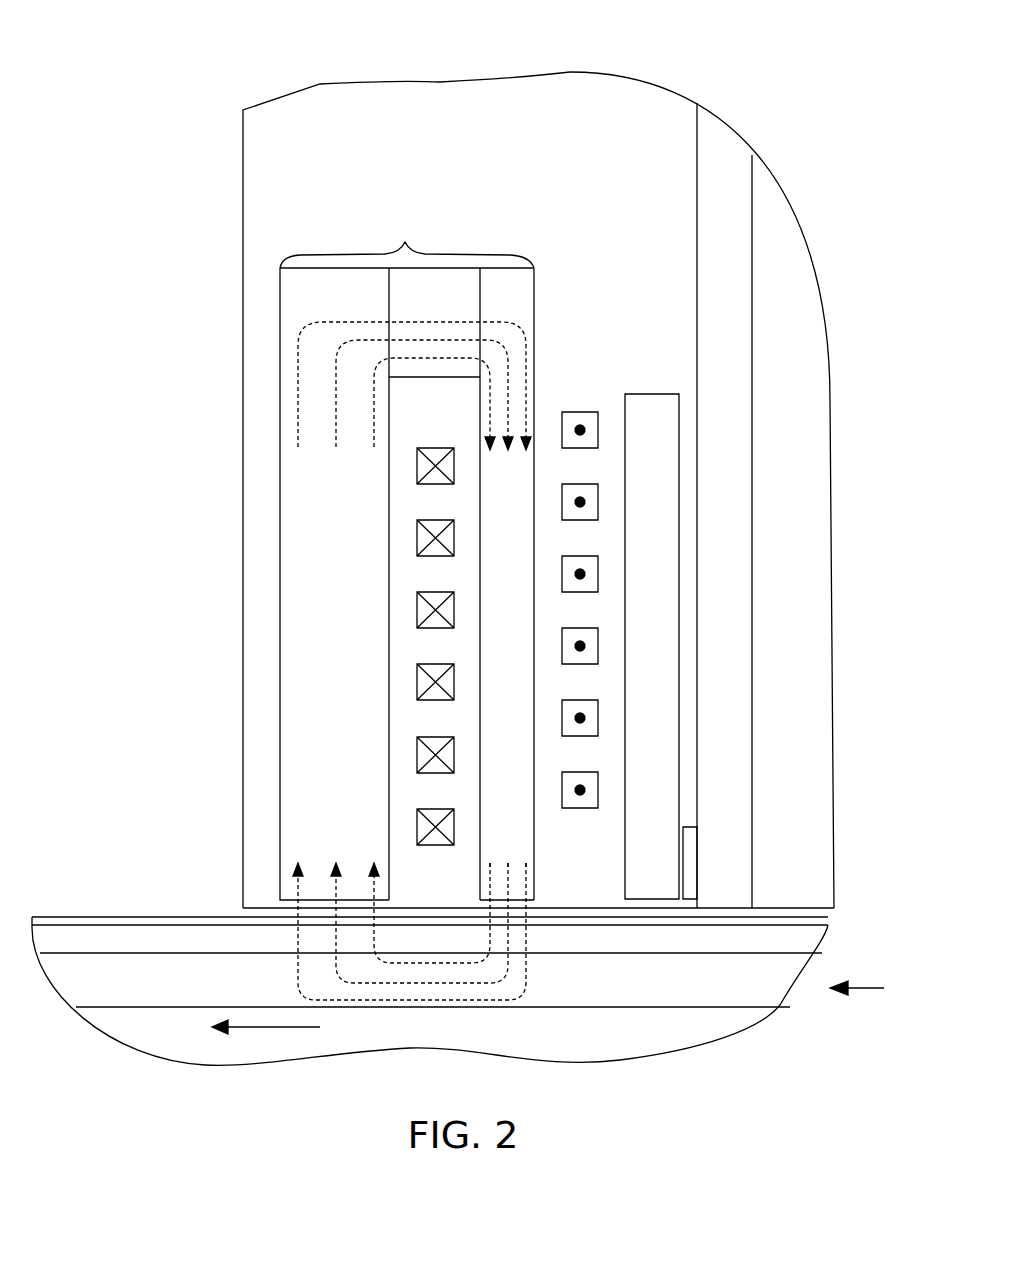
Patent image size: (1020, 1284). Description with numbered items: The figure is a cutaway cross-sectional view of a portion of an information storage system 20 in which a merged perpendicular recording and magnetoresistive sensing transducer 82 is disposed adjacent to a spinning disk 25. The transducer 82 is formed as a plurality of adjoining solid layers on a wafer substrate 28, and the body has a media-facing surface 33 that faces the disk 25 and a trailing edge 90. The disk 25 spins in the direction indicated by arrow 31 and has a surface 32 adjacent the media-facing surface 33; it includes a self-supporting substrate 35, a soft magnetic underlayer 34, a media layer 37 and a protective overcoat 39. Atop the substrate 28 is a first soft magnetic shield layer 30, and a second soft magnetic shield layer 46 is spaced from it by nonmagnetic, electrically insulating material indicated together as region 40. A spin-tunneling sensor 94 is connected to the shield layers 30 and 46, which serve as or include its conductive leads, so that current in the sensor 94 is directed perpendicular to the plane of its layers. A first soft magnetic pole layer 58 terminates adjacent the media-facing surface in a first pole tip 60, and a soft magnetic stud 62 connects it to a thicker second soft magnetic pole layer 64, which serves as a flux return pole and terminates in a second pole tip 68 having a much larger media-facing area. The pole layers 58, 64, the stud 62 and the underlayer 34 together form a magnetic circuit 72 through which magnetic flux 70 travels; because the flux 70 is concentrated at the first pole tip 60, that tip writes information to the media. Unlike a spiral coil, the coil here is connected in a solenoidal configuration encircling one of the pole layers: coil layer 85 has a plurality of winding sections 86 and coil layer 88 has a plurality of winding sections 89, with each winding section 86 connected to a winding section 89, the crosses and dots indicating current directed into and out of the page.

The information storage system 20 is at (126, 44).
The spinning disk 25 is at (871, 989).
The wafer substrate 28 is at (800, 573).
The first soft magnetic shield layer 30 is at (709, 606).
The arrow 31 is at (268, 1030).
The surface 32 is at (152, 905).
The media-facing surface 33 is at (622, 930).
The soft magnetic underlayer 34 is at (122, 987).
The self-supporting substrate 35 is at (520, 1039).
The media layer 37 is at (214, 945).
The protective overcoat 39 is at (684, 926).
The region of nonmagnetic, electrically insulating material 40 is at (633, 227).
The second soft magnetic shield layer 46 is at (635, 606).
The first soft magnetic pole layer 58 is at (492, 625).
The first pole tip 60 is at (518, 882).
The soft magnetic stud 62 is at (419, 303).
The second soft magnetic pole layer 64 is at (320, 625).
The second pole tip 68 is at (354, 882).
The magnetic flux 70 is at (296, 340).
The magnetic circuit 72 is at (407, 242).
The transducer 82 is at (212, 740).
The coil layer 85 is at (578, 378).
The winding sections 86 is at (598, 718).
The coil layer 88 is at (434, 428).
The winding sections 89 is at (417, 756).
The trailing edge 90 is at (243, 538).
The spin-tunneling sensor 94 is at (697, 861).